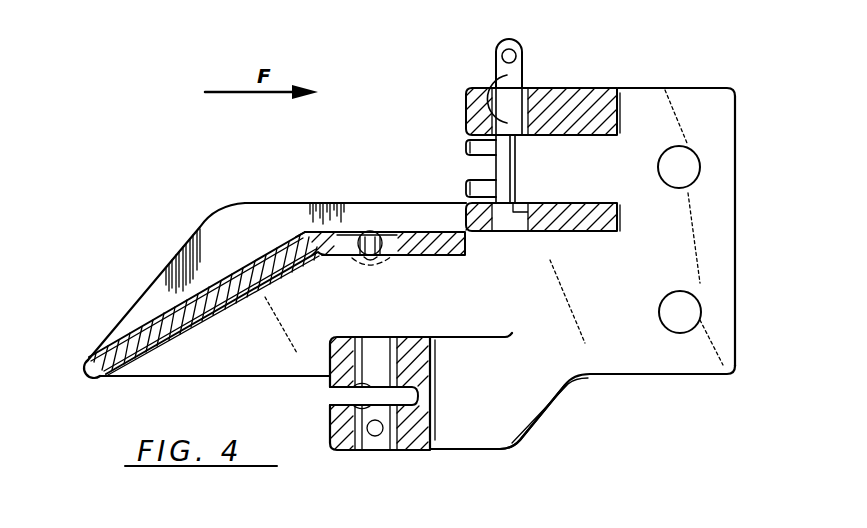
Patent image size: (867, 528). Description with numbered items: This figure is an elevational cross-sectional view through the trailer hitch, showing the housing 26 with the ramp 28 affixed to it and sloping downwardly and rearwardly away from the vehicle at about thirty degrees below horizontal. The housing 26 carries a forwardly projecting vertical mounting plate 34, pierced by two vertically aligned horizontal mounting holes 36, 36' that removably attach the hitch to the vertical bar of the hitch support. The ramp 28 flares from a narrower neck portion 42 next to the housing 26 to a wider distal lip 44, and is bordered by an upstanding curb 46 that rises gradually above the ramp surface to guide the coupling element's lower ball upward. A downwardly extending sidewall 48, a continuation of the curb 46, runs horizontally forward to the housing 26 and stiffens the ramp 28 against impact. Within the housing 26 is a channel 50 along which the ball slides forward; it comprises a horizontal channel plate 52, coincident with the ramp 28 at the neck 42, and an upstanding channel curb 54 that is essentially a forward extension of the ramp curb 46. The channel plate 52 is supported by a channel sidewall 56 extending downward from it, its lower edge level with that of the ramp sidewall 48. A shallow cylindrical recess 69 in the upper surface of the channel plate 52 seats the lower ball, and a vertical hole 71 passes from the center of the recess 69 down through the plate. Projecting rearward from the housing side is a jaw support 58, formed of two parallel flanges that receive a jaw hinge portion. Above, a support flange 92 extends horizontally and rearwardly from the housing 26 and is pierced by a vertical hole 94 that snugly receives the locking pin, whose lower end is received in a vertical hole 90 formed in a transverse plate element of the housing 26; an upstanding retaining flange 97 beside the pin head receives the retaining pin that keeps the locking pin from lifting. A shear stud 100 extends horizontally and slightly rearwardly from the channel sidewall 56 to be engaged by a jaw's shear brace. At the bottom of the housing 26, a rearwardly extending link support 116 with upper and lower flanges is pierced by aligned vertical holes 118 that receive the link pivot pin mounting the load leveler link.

The housing 26 is at (608, 376).
The ramp 28 is at (266, 252).
The mounting plate 34 is at (697, 87).
The mounting hole 36 is at (713, 167).
The mounting hole 36' is at (717, 312).
The neck portion 42 is at (298, 226).
The distal lip 44 is at (85, 362).
The upstanding curb 46 is at (196, 229).
The sidewall 48 is at (188, 378).
The channel 50 is at (378, 145).
The channel plate 52 is at (335, 231).
The channel curb 54 is at (427, 203).
The channel sidewall 56 is at (400, 318).
The jaw support 58 is at (466, 147).
The cylindrical recess 69 is at (358, 231).
The vertical hole 71 is at (364, 258).
The vertical hole 90 is at (518, 203).
The support flange 92 is at (466, 90).
The vertical hole 94 is at (492, 73).
The retaining flange 97 is at (522, 52).
The shear stud 100 is at (398, 262).
The link support 116 is at (476, 451).
The vertical hole 118 is at (357, 396).